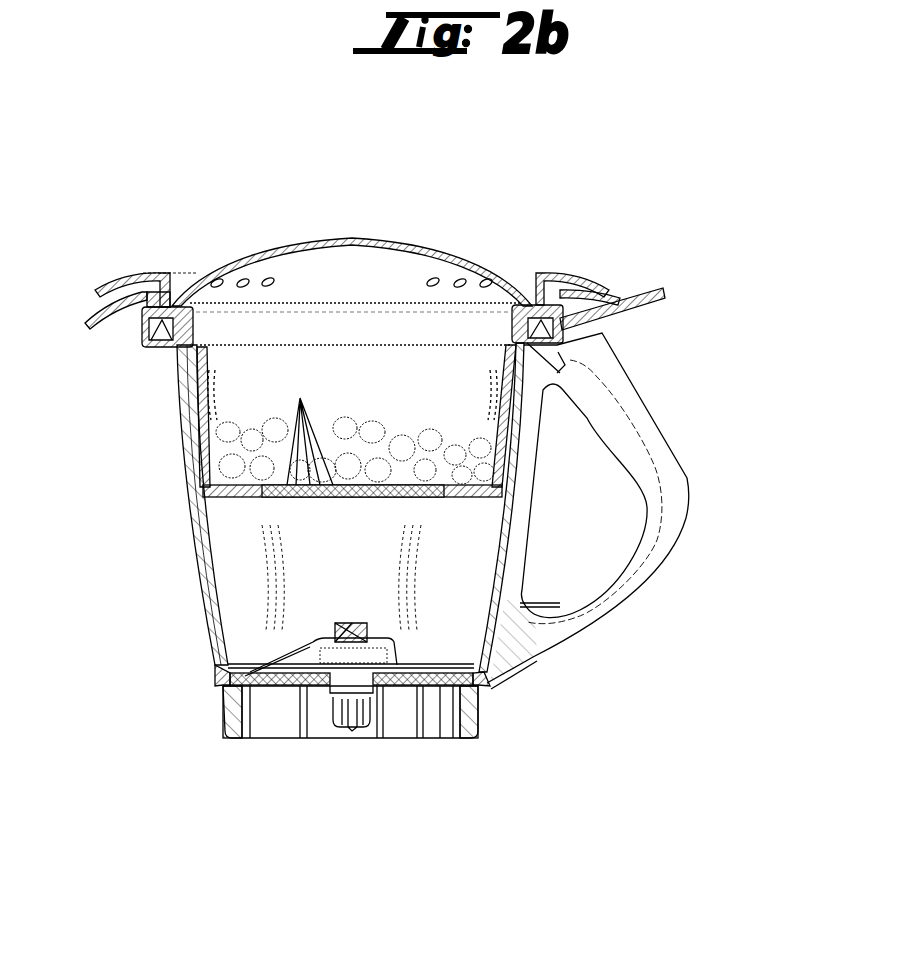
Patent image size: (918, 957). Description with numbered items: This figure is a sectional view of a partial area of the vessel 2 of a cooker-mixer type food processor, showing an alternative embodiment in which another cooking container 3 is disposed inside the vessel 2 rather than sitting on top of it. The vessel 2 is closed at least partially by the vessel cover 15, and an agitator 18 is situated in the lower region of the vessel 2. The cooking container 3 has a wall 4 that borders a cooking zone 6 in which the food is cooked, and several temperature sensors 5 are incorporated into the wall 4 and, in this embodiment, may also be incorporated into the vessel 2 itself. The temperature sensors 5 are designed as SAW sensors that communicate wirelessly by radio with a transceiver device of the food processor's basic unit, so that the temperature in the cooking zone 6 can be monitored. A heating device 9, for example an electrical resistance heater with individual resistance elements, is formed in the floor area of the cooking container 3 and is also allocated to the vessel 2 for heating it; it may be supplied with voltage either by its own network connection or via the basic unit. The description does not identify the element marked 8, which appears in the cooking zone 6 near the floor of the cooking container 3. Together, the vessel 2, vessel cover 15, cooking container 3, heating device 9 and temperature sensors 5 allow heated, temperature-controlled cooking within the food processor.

The vessel 2 is at (244, 517).
The cooking container 3 is at (198, 467).
The wall 4 is at (470, 485).
The temperature sensors 5 is at (520, 412).
The cooking zone 6 is at (360, 394).
The cone 8 is at (300, 400).
The heating device 9 is at (237, 485).
The vessel cover 15 is at (158, 350).
The agitator 18 is at (313, 642).